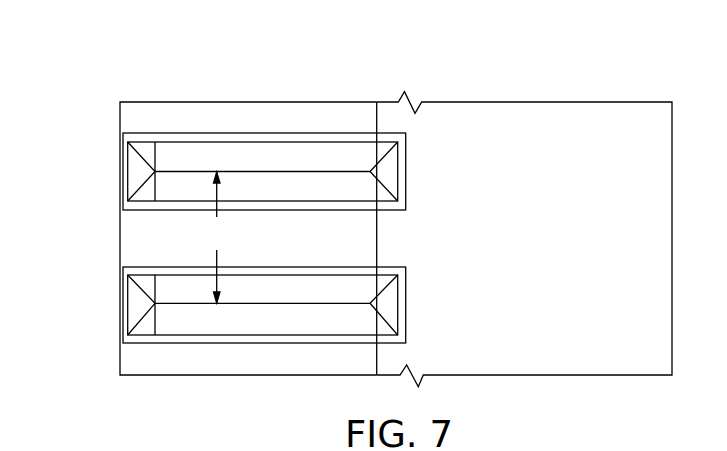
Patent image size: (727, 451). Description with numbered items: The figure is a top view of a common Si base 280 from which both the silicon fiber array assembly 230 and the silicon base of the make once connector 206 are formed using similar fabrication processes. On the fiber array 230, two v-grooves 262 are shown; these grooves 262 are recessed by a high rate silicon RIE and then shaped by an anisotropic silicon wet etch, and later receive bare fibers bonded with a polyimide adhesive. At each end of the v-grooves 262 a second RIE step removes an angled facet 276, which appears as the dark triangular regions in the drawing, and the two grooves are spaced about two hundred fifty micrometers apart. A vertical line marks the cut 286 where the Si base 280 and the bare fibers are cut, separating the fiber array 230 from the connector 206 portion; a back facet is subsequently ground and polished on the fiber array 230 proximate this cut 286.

The make once connector 206 is at (547, 118).
The silicon fiber array assembly 230 is at (118, 123).
The v-grooves 262 is at (270, 288).
The angled facet 276 is at (118, 177).
The Si base 280 is at (343, 196).
The cut 286 is at (377, 102).